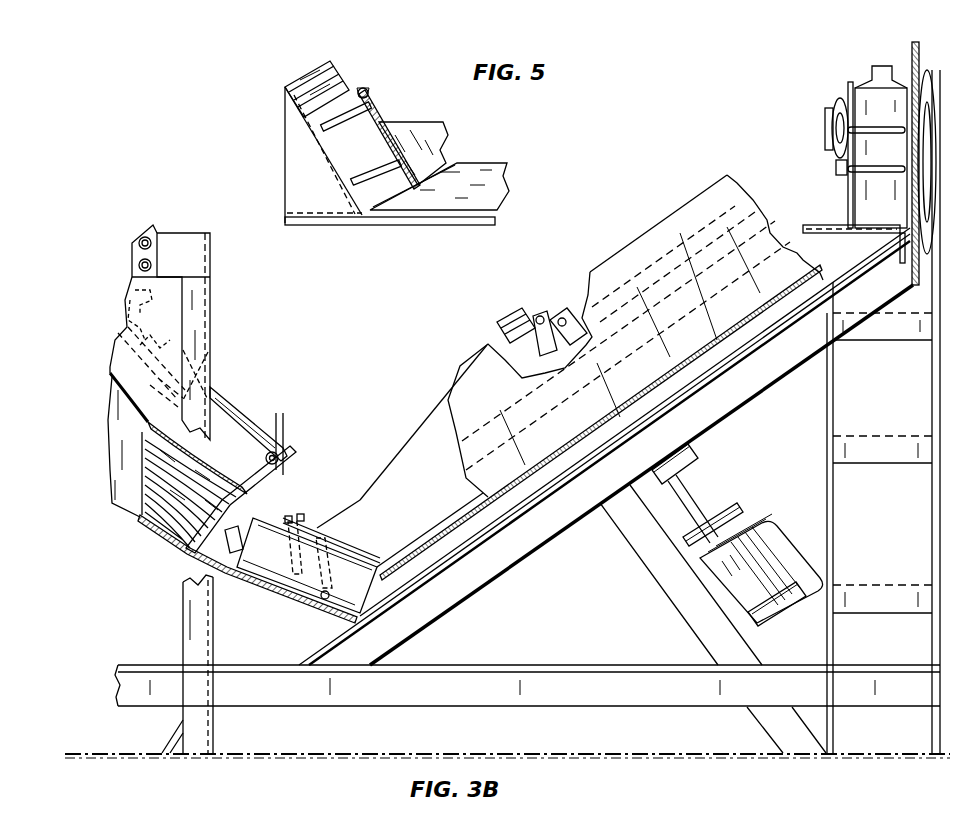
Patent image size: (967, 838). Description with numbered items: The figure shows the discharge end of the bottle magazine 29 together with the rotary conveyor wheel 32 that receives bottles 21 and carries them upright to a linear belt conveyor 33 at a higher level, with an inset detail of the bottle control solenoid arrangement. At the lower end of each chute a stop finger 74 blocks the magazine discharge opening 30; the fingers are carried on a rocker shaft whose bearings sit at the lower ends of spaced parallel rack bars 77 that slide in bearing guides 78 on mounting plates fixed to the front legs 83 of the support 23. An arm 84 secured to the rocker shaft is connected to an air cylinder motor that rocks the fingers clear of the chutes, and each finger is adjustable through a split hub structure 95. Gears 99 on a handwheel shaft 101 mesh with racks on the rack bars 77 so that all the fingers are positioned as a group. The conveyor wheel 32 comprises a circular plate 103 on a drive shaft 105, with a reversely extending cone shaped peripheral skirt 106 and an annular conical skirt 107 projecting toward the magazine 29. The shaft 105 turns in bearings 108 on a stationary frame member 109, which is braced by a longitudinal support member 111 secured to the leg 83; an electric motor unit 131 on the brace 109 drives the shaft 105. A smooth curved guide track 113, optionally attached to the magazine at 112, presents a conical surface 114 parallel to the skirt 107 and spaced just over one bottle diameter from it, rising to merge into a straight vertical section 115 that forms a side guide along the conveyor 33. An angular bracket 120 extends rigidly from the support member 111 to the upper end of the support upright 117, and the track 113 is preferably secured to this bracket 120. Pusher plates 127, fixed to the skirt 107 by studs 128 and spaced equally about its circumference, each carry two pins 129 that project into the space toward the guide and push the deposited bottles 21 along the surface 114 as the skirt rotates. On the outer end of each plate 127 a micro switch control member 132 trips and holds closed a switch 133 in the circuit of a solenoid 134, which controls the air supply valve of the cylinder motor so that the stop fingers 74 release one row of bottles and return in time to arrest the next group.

In FIG. 3B, the bottle 21 is at (892, 209).
In FIG. 3B, the support 23 is at (198, 246).
In FIG. 3B, the magazine 29 is at (115, 455).
In FIG. 3B, the magazine discharge opening 30 is at (222, 517).
In FIG. 3B, the rotary conveyor wheel 32 is at (784, 172).
In FIG. 3B, the linear belt conveyor 33 is at (900, 255).
In FIG. 3B, the stop finger 74 is at (265, 478).
In FIG. 3B, the rack bar 77 is at (240, 427).
In FIG. 3B, the bearing guide 78 is at (158, 384).
In FIG. 3B, the front leg 83 is at (183, 626).
In FIG. 3B, the arm 84 is at (284, 422).
In FIG. 3B, the split hub structure 95 is at (148, 332).
In FIG. 3B, the gear 99 is at (146, 312).
In FIG. 3B, the shaft 101 is at (148, 290).
In FIG. 5, the circular plate 103 is at (475, 165).
In FIG. 3B, the drive shaft 105 is at (700, 500).
In FIG. 5, the cone shaped peripheral skirt 106 is at (425, 208).
In FIG. 3B, the cone shaped peripheral skirt 106 is at (413, 560).
In FIG. 5, the annular conical skirt 107 is at (413, 147).
In FIG. 3B, the annular conical skirt 107 is at (378, 490).
In FIG. 3B, the bearing 108 is at (690, 468).
In FIG. 3B, the stationary frame member 109 is at (653, 553).
In FIG. 3B, the longitudinal support member 111 is at (548, 683).
In FIG. 3B, the attachment point 112 is at (197, 555).
In FIG. 5, the curved guide track 113 is at (308, 137).
In FIG. 3B, the curved guide track 113 is at (648, 240).
In FIG. 3B, the conical surface 114 is at (322, 600).
In FIG. 3B, the straight vertical section 115 is at (913, 45).
In FIG. 3B, the support upright 117 is at (935, 390).
In FIG. 3B, the angular bracket 120 is at (523, 556).
In FIG. 5, the pusher plate 127 is at (385, 120).
In FIG. 3B, the pusher plate 127 is at (835, 120).
In FIG. 3B, the stud 128 is at (570, 320).
In FIG. 5, the pin 129 is at (380, 172).
In FIG. 3B, the pin 129 is at (893, 134).
In FIG. 3B, the electric motor unit 131 is at (795, 562).
In FIG. 5, the micro switch control member 132 is at (368, 95).
In FIG. 3B, the micro switch control member 132 is at (560, 317).
In FIG. 5, the switch 133 is at (365, 89).
In FIG. 3B, the switch 133 is at (547, 322).
In FIG. 5, the solenoid 134 is at (308, 78).
In FIG. 3B, the solenoid 134 is at (508, 317).